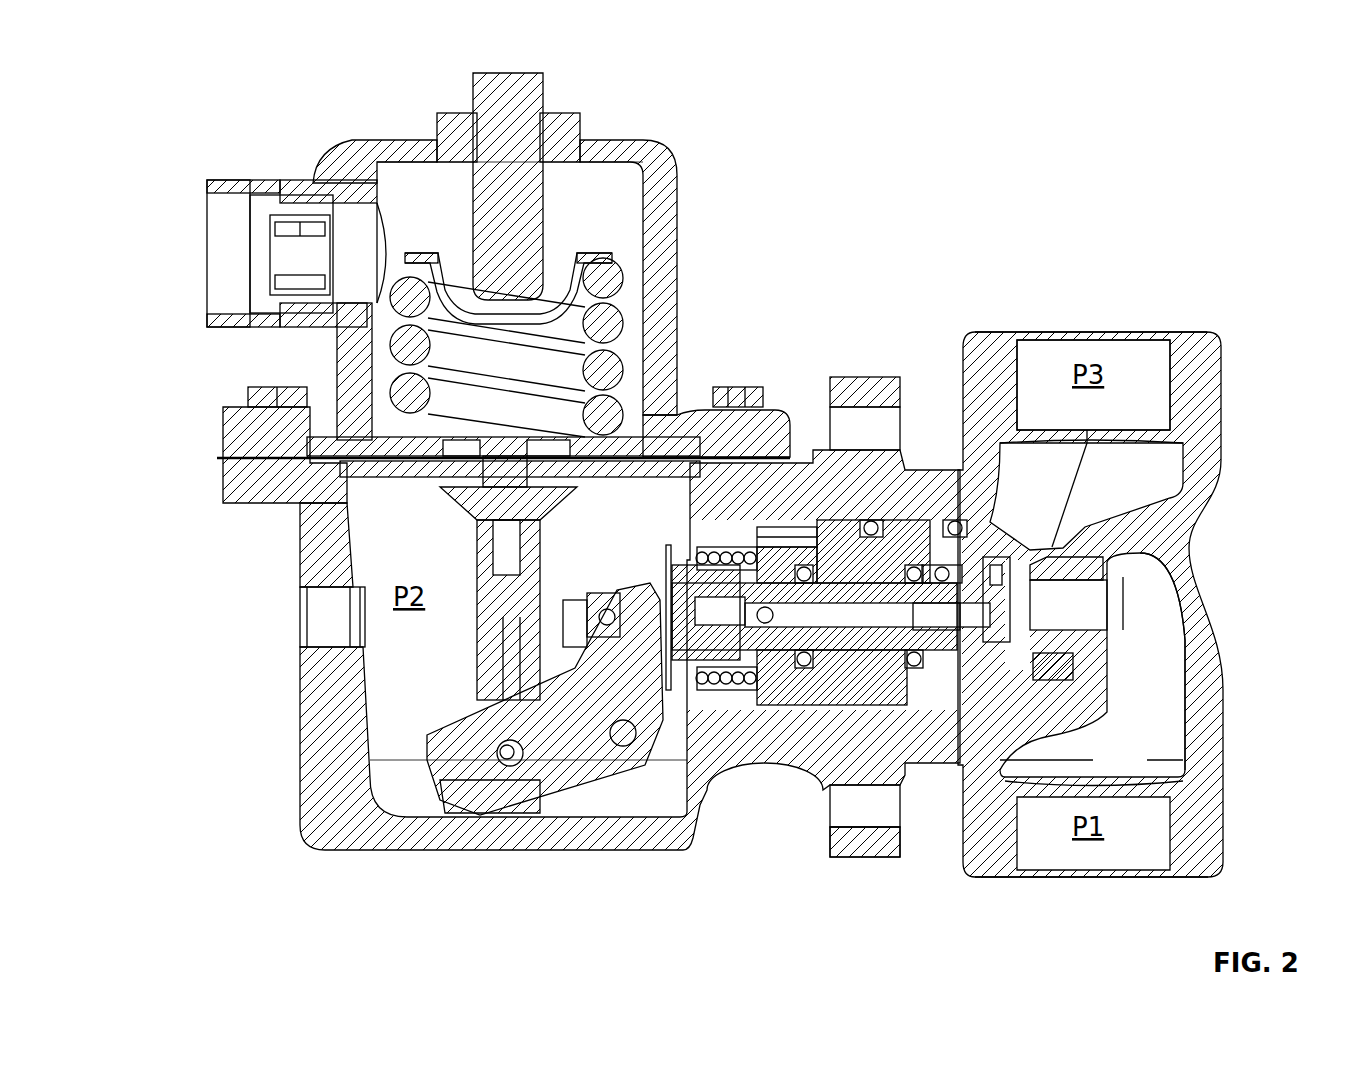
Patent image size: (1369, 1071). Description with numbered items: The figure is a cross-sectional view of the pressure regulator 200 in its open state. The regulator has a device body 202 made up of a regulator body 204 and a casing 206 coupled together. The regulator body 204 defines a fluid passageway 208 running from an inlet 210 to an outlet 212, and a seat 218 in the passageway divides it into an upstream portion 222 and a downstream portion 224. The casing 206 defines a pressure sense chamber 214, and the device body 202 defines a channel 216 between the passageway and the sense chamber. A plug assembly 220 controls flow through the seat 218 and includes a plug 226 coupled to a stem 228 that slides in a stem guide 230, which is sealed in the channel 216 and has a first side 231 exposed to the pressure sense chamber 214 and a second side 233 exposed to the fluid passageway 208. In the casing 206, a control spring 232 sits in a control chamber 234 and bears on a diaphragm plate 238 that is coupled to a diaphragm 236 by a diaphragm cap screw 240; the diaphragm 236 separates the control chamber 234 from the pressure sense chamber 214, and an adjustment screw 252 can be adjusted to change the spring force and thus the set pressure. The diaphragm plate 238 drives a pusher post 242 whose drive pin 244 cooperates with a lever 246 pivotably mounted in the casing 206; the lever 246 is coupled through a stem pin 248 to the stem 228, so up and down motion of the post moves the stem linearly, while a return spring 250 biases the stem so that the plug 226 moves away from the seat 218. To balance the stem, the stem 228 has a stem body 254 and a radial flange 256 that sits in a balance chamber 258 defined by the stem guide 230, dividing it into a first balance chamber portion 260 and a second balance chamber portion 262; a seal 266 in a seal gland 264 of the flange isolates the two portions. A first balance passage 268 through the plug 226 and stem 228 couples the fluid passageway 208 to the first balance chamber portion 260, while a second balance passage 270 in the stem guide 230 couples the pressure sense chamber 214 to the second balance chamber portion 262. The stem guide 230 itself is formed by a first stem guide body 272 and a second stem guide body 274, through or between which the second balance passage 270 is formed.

The pressure regulator 200 is at (1030, 90).
The device body 202 is at (913, 537).
The regulator body 204 is at (1207, 425).
The casing 206 is at (332, 730).
The fluid passageway 208 is at (1091, 757).
The inlet 210 is at (1128, 882).
The outlet 212 is at (1080, 328).
The pressure sense chamber 214 is at (372, 535).
The channel 216 is at (741, 530).
The seat 218 is at (1058, 557).
The plug assembly 220 is at (815, 512).
The upstream portion 222 is at (1170, 683).
The downstream portion 224 is at (1155, 381).
The plug 226 is at (995, 557).
The stem 228 is at (925, 560).
The stem guide 230 is at (867, 392).
The first side 231 is at (668, 562).
The control spring 232 is at (616, 280).
The second side 233 is at (932, 545).
The control chamber 234 is at (650, 205).
The diaphragm 236 is at (512, 463).
The diaphragm plate 238 is at (355, 470).
The diaphragm cap screw 240 is at (372, 465).
The pusher post 242 is at (480, 658).
The drive pin 244 is at (507, 762).
The lever 246 is at (580, 760).
The stem pin 248 is at (600, 615).
The return spring 250 is at (700, 765).
The adjustment screw 252 is at (500, 108).
The stem body 254 is at (895, 762).
The flange 256 is at (852, 645).
The balance chamber 258 is at (855, 565).
The first balance chamber portion 260 is at (778, 552).
The second balance chamber portion 262 is at (843, 552).
The seal gland 264 is at (797, 685).
The seal 266 is at (830, 770).
The first balance passage 268 is at (905, 760).
The second balance passage 270 is at (797, 527).
The first stem guide body 272 is at (755, 700).
The second stem guide body 274 is at (935, 765).